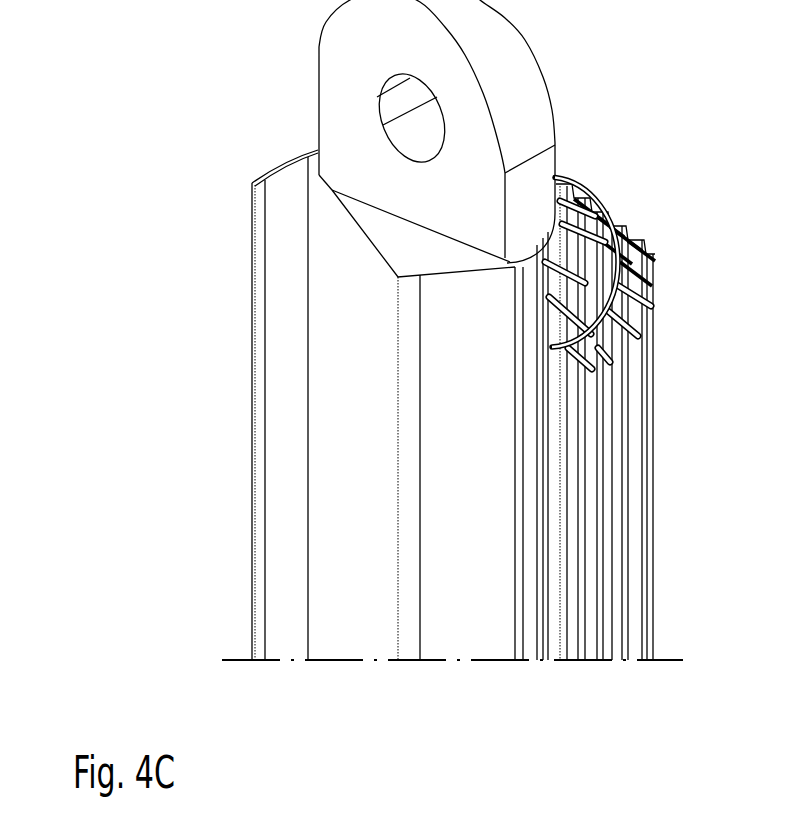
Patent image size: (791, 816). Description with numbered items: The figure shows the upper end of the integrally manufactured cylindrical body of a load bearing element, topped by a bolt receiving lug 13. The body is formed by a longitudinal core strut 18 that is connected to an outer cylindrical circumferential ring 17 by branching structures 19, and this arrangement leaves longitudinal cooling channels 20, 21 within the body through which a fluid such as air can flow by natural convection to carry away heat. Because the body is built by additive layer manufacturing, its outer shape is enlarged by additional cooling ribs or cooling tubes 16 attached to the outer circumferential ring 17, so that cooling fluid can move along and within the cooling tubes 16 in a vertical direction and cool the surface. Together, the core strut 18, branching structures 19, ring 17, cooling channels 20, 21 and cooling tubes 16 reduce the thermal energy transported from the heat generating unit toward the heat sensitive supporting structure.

The bolt receiving lug 13 is at (397, 103).
The cooling tubes 16 is at (648, 297).
The outer circumferential ring 17 is at (638, 233).
The longitudinal core strut 18 is at (410, 412).
The branching structures 19 is at (560, 208).
The longitudinal cooling channels 20 is at (540, 281).
The cooling channels 21 is at (640, 312).